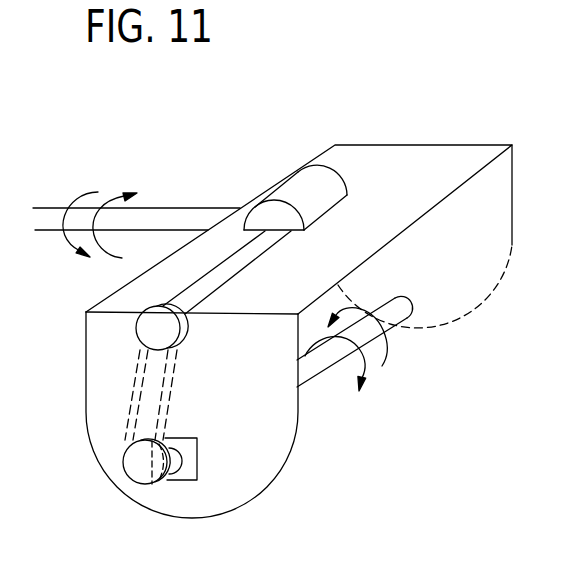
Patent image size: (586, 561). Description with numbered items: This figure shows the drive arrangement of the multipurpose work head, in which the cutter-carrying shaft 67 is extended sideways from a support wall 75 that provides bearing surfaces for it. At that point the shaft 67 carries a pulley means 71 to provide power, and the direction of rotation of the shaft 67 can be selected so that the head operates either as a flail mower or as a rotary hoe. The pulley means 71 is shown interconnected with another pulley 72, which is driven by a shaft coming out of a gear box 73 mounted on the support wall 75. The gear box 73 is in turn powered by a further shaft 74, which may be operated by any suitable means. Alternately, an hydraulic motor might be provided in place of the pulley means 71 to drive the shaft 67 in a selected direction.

The shaft 67 is at (318, 362).
The pulley means 71 is at (139, 467).
The pulley 72 is at (150, 333).
The gear box 73 is at (314, 206).
The shaft 74 is at (182, 216).
The support wall 75 is at (245, 473).